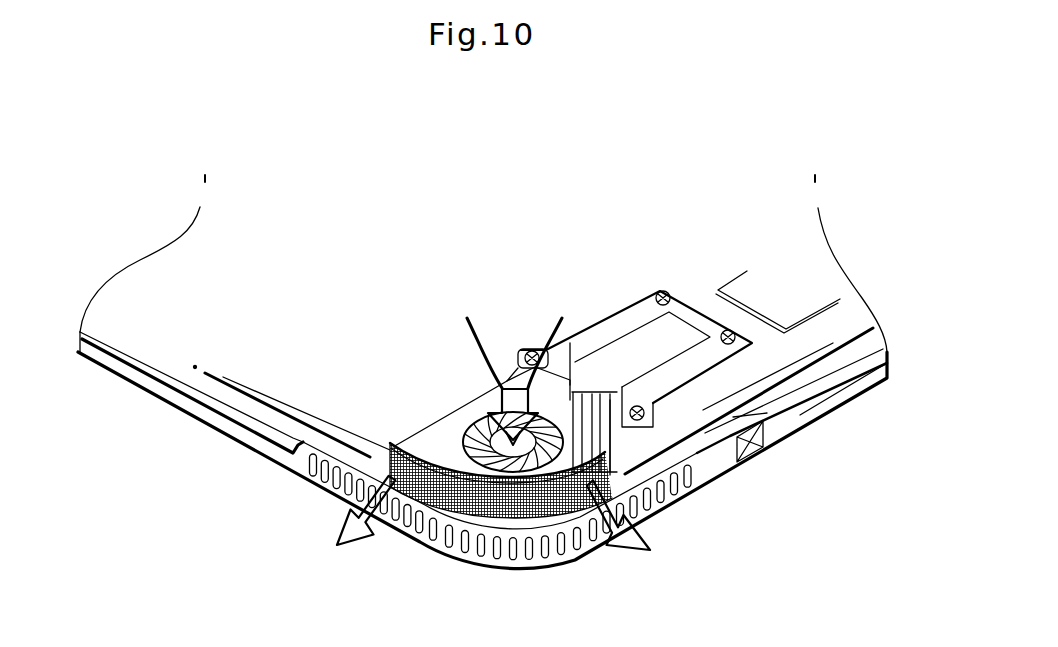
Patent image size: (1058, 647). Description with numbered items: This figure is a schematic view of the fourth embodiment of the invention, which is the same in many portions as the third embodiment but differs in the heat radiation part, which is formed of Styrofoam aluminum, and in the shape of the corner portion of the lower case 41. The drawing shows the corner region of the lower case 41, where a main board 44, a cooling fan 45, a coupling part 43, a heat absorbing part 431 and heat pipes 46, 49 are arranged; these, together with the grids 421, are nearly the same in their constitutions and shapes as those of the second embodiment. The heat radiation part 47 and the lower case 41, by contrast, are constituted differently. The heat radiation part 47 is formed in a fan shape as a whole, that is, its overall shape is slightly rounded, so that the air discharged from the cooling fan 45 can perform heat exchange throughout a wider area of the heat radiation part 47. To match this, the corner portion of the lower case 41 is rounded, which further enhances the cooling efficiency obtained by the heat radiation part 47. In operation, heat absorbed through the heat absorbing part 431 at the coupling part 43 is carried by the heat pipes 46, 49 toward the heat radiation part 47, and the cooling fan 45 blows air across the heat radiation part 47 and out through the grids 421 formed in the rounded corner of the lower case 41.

The lower case 41 is at (793, 418).
The grids 421 is at (430, 545).
The coupling part 43 is at (610, 330).
The heat absorbing part 431 is at (673, 330).
The main board 44 is at (823, 365).
The cooling fan 45 is at (468, 432).
The heat pipe 46 is at (390, 433).
The heat radiation part 47 is at (343, 483).
The heat pipe 49 is at (740, 425).